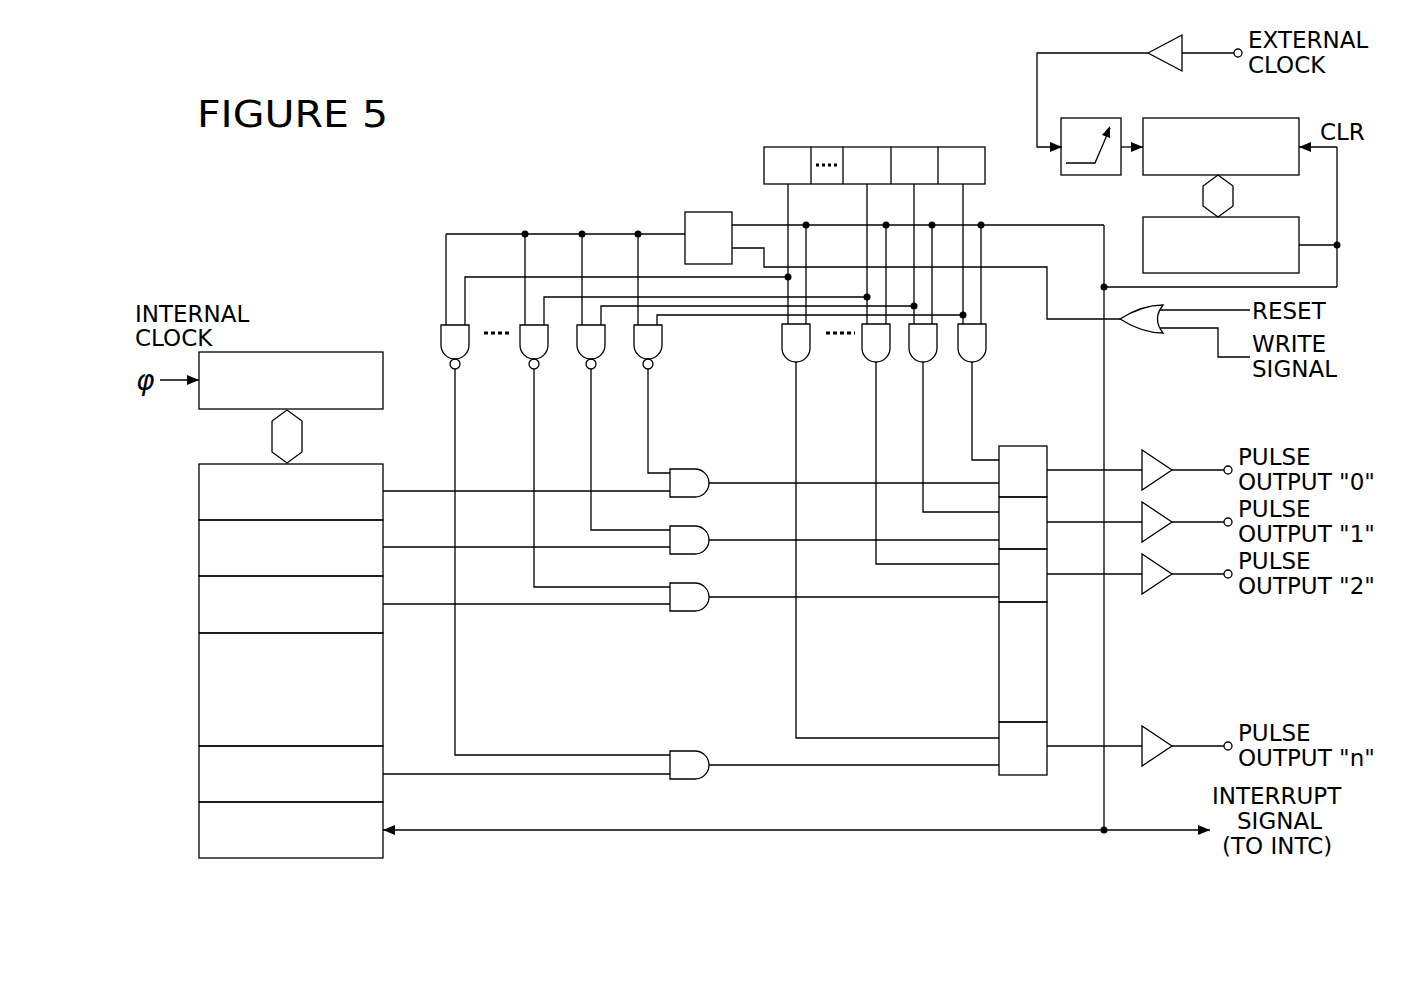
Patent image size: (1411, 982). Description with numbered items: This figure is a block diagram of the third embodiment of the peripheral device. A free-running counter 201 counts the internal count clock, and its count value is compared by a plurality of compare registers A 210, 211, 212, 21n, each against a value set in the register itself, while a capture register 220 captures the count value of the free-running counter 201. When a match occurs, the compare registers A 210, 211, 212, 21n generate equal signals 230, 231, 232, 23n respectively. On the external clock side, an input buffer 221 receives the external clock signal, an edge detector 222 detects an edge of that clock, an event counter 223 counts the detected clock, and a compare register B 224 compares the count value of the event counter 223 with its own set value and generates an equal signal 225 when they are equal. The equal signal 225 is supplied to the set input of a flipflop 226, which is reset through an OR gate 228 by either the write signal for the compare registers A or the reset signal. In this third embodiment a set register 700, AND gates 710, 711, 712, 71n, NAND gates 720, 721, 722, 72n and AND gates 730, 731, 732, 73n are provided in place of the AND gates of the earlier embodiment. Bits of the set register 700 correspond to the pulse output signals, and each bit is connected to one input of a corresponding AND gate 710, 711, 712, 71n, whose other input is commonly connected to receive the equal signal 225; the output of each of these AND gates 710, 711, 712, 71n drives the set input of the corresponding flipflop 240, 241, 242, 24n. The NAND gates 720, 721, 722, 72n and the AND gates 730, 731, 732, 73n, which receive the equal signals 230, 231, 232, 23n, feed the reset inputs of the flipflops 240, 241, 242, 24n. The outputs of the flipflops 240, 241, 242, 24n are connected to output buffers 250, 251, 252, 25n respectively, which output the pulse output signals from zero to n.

The free-running counter 201 is at (313, 352).
The compare register A 210 is at (199, 505).
The compare register A 211 is at (199, 561).
The compare register A 212 is at (199, 618).
The compare register A 21n is at (199, 788).
The capture register 220 is at (199, 845).
The equal signal 230 is at (403, 491).
The equal signal 231 is at (403, 547).
The equal signal 232 is at (403, 604).
The equal signal 23n is at (403, 774).
The NAND gate 72n is at (469, 343).
The NAND gate 722 is at (548, 343).
The NAND gate 721 is at (605, 343).
The NAND gate 720 is at (662, 343).
The set register 700 is at (790, 147).
The flipflop 226 is at (708, 212).
The AND gate 71n is at (810, 343).
The AND gate 712 is at (890, 343).
The AND gate 711 is at (937, 343).
The AND gate 710 is at (986, 343).
The AND gate 730 is at (703, 472).
The AND gate 731 is at (703, 529).
The AND gate 732 is at (703, 586).
The AND gate 73n is at (698, 750).
The flipflop 240 is at (1047, 456).
The flipflop 241 is at (1047, 508).
The flipflop 242 is at (1047, 560).
The flipflop 24n is at (1047, 732).
The output buffer 250 is at (1158, 456).
The output buffer 251 is at (1158, 508).
The output buffer 252 is at (1158, 560).
The output buffer 25n is at (1158, 732).
The input buffer 221 is at (1183, 60).
The edge detector 222 is at (1088, 118).
The event counter 223 is at (1255, 118).
The compare register B 224 is at (1252, 217).
The equal signal 225 is at (1104, 412).
The OR gate 228 is at (1150, 334).